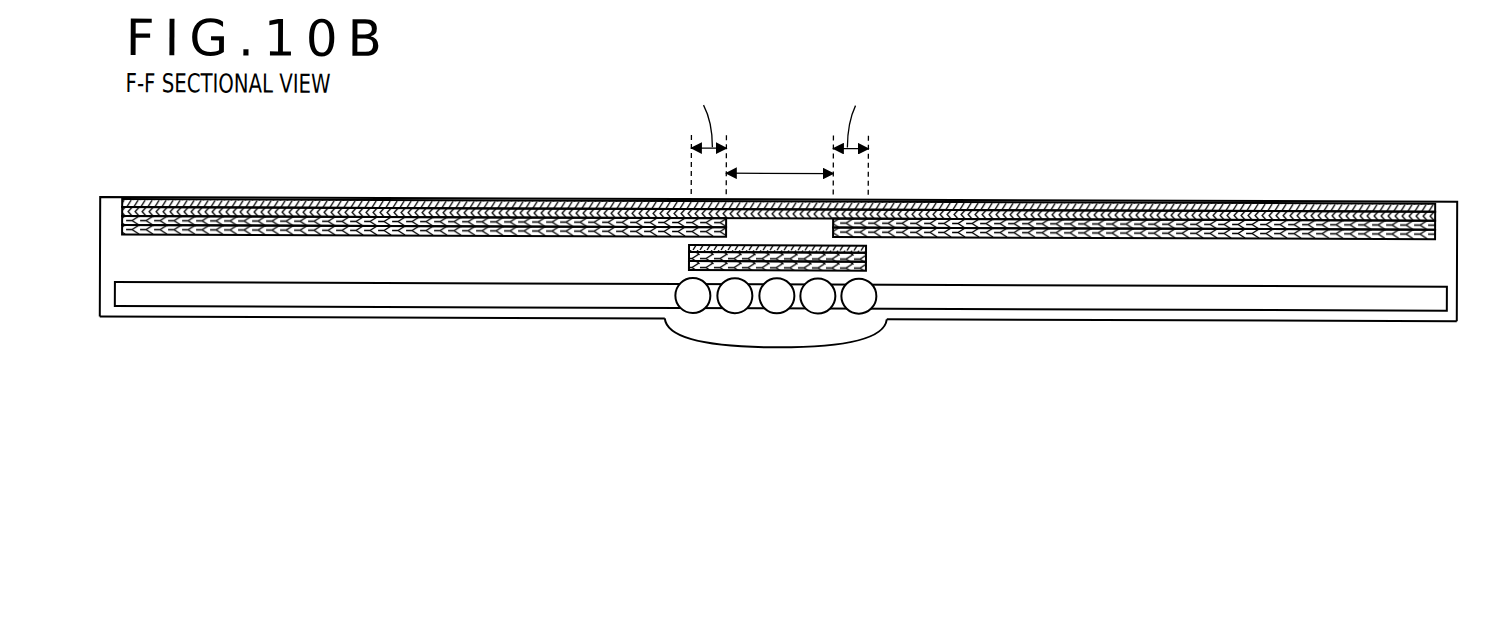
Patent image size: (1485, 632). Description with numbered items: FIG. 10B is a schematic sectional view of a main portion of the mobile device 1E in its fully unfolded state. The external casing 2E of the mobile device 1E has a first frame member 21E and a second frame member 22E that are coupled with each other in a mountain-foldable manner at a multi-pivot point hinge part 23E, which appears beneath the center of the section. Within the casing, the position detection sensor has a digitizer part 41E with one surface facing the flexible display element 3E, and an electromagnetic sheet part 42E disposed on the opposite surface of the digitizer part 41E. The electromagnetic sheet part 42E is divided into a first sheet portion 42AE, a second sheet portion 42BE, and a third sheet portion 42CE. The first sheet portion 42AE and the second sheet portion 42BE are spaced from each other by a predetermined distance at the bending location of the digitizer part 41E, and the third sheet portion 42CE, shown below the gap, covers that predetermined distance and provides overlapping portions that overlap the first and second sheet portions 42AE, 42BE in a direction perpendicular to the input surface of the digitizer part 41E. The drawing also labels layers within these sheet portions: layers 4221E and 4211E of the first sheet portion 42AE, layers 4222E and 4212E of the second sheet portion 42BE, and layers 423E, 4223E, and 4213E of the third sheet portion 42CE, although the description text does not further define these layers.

The mobile device 1E is at (990, 192).
The external casing 2E is at (1322, 318).
The first frame member 21E is at (1092, 308).
The second frame member 22E is at (245, 311).
The multi-pivot point hinge part 23E is at (779, 349).
The flexible display element 3E is at (282, 201).
The digitizer part 41E is at (178, 209).
The electromagnetic sheet part 42E is at (1438, 220).
The first sheet portion 42AE is at (1262, 96).
The second sheet portion 42BE is at (510, 100).
The third sheet portion 42CE is at (515, 442).
The first wiring layer 4221E is at (1132, 219).
The first base layer 4211E is at (1145, 229).
The second wiring layer 4222E is at (377, 210).
The second base layer 4212E is at (390, 228).
The third cover layer 423E is at (688, 245).
The third wiring layer 4223E is at (688, 256).
The third base layer 4213E is at (688, 266).